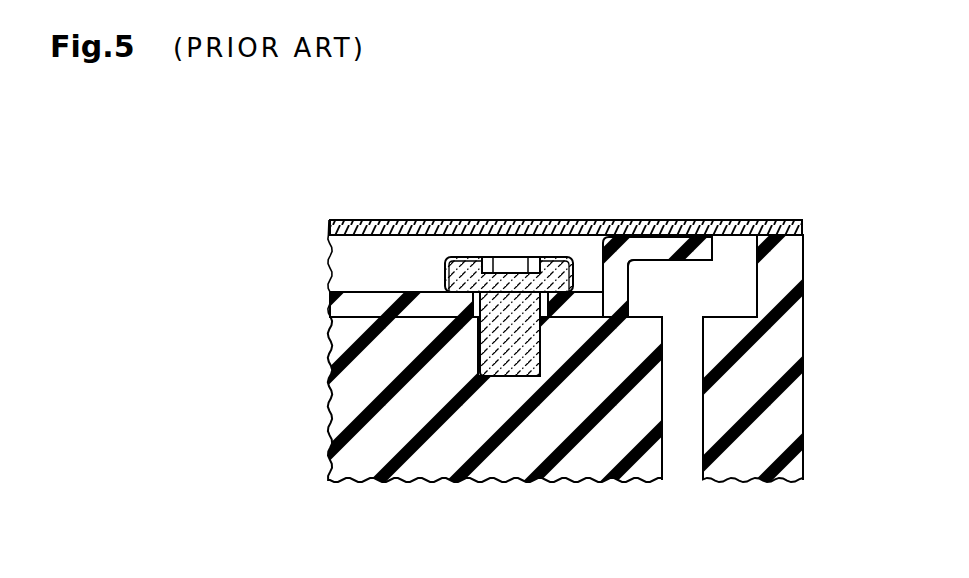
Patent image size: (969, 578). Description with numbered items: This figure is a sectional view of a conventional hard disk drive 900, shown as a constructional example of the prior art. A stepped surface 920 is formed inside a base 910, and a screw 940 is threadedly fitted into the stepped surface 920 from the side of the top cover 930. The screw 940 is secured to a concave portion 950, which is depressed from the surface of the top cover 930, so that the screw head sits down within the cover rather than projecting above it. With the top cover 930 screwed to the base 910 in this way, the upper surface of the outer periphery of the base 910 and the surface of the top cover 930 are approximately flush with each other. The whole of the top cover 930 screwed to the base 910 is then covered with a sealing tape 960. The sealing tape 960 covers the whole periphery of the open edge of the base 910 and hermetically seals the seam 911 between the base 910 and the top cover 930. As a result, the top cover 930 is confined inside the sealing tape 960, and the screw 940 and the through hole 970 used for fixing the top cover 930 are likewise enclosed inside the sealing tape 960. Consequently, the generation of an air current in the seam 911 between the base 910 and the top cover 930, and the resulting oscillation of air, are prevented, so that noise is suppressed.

The hard disk drive 900 is at (306, 200).
The base 910 is at (780, 412).
The seam 911 is at (715, 250).
The stepped surface 920 is at (340, 417).
The top cover 930 is at (340, 313).
The screw 940 is at (496, 378).
The concave portion 950 is at (588, 290).
The sealing tape 960 is at (803, 222).
The through hole 970 is at (450, 260).